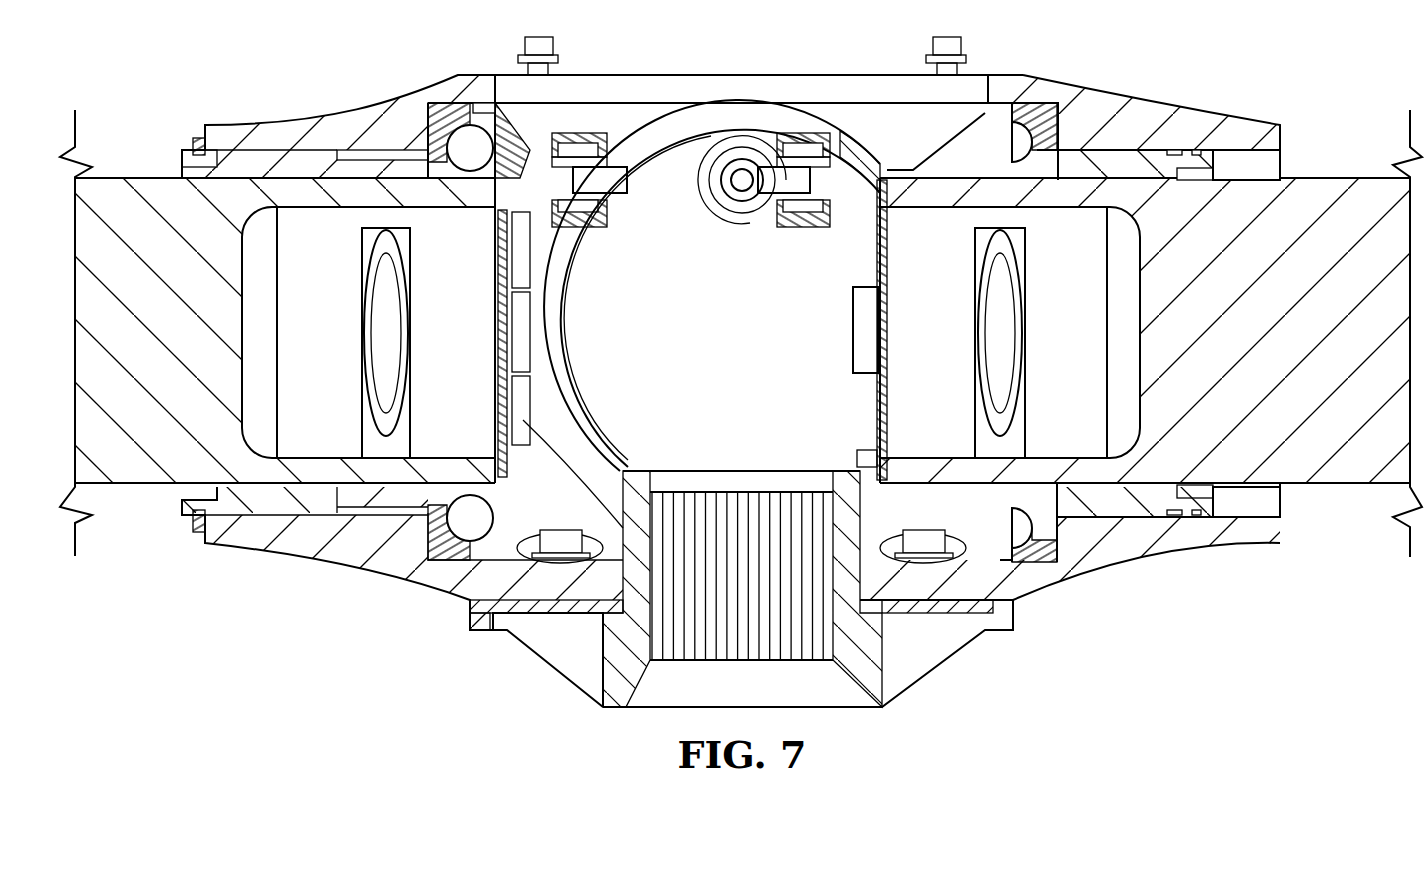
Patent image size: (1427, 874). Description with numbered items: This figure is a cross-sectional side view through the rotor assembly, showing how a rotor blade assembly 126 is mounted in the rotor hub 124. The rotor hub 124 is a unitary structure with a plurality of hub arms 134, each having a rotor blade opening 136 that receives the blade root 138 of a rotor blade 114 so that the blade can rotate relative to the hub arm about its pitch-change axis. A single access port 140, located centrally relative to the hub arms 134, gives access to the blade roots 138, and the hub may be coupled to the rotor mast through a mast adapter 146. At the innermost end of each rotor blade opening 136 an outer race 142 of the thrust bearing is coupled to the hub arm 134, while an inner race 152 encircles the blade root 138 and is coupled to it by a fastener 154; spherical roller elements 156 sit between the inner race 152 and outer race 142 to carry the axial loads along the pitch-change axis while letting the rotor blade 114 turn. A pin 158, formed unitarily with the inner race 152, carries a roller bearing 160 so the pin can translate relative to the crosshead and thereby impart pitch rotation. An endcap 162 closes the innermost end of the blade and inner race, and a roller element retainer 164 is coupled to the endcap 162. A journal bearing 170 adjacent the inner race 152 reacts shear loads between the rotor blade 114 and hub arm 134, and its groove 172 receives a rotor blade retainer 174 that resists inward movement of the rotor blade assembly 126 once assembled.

The rotor blade 114 is at (142, 488).
The rotor hub 124 is at (442, 74).
The rotor blade assembly 126 is at (150, 178).
The hub arm 134 is at (340, 548).
The rotor blade opening 136 is at (1272, 162).
The blade root 138 is at (1045, 470).
The access port 140 is at (675, 74).
The outer race 142 is at (1045, 118).
The mast adapter 146 is at (935, 662).
The inner race 152 is at (907, 170).
The fastener 154 is at (1025, 245).
The roller element 156 is at (473, 158).
The pin 158 is at (847, 166).
The roller bearing 160 is at (790, 227).
The endcap 162 is at (855, 345).
The roller element retainer 164 is at (513, 130).
The journal bearing 170 is at (1147, 156).
The groove 172 is at (1193, 148).
The rotor blade retainer 174 is at (197, 136).